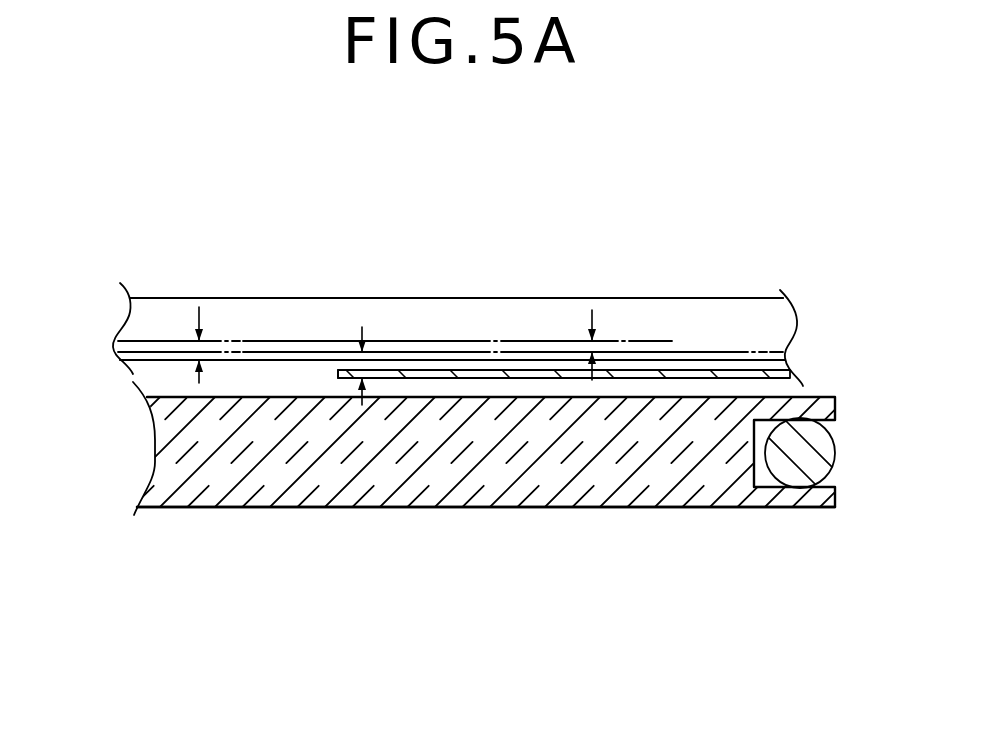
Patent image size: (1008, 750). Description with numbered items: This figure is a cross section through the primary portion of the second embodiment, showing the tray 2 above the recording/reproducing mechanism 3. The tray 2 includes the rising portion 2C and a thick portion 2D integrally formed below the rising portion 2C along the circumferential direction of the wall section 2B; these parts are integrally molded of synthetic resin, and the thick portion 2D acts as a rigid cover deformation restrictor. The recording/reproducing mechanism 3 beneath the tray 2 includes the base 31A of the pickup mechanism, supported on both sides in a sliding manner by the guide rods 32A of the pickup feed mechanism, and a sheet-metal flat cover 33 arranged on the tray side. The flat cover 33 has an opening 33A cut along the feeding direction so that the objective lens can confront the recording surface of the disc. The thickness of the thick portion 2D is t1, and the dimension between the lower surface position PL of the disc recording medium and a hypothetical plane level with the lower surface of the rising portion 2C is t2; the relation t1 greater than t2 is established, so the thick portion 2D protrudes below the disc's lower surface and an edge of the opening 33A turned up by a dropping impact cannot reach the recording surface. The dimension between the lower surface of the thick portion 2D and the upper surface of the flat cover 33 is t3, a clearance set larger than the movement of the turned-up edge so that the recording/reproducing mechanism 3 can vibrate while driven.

The tray 2 is at (189, 243).
The wall section 2B is at (460, 312).
The rising portion 2C is at (130, 333).
The thick portion 2D is at (130, 358).
The lower surface position of the disc recording medium PL is at (717, 350).
The thickness of the thick portion t1 is at (200, 342).
The dimension between the disc lower surface and the rising portion lower surface pl t2 is at (596, 350).
The clearance t3 is at (354, 362).
The recording/reproducing mechanism 3 is at (206, 534).
The base 31A is at (460, 505).
The flat cover 33 is at (645, 375).
The opening 33A is at (340, 374).
The guide rod 32A is at (797, 473).